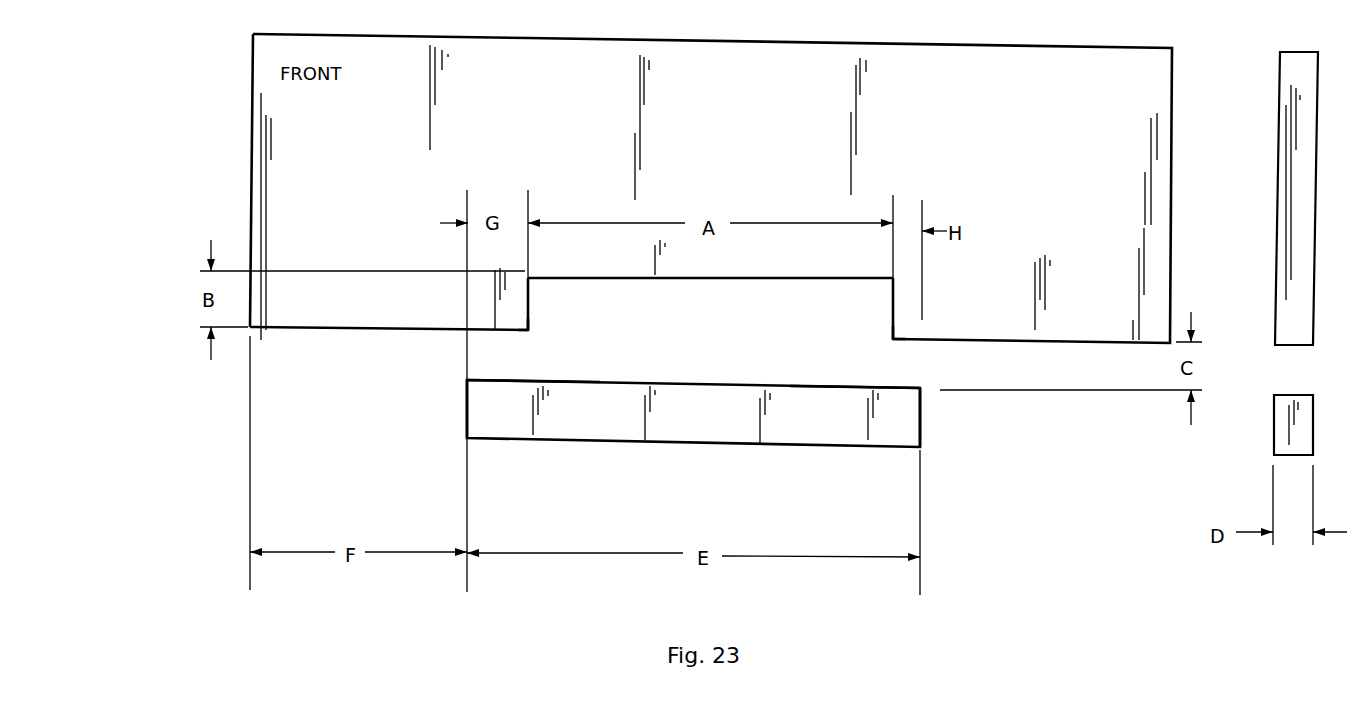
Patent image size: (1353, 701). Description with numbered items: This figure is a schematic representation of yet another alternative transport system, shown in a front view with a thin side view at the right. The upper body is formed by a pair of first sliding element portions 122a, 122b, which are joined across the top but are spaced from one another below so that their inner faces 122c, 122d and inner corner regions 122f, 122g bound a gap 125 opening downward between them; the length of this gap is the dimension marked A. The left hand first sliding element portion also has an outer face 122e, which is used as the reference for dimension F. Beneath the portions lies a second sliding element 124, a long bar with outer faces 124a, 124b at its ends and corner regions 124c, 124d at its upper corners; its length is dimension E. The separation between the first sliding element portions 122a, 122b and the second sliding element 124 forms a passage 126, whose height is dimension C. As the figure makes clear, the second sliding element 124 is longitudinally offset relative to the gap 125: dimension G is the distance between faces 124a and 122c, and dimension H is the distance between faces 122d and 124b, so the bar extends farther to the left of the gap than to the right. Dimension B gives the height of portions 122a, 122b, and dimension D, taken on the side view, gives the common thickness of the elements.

The first sliding element portion 122a is at (325, 310).
The first sliding element portion 122b is at (976, 324).
The inner face 122c is at (532, 299).
The inner face 122d is at (882, 313).
The outer face 122e is at (250, 297).
The inner corner region 122f is at (520, 320).
The inner corner region 122g is at (903, 330).
The gap 125 is at (705, 309).
The passage 126 is at (493, 352).
The second sliding element 124 is at (677, 408).
The outer face 124a is at (463, 441).
The outer face 124b is at (929, 428).
The corner region 124c is at (473, 393).
The corner region 124d is at (912, 398).